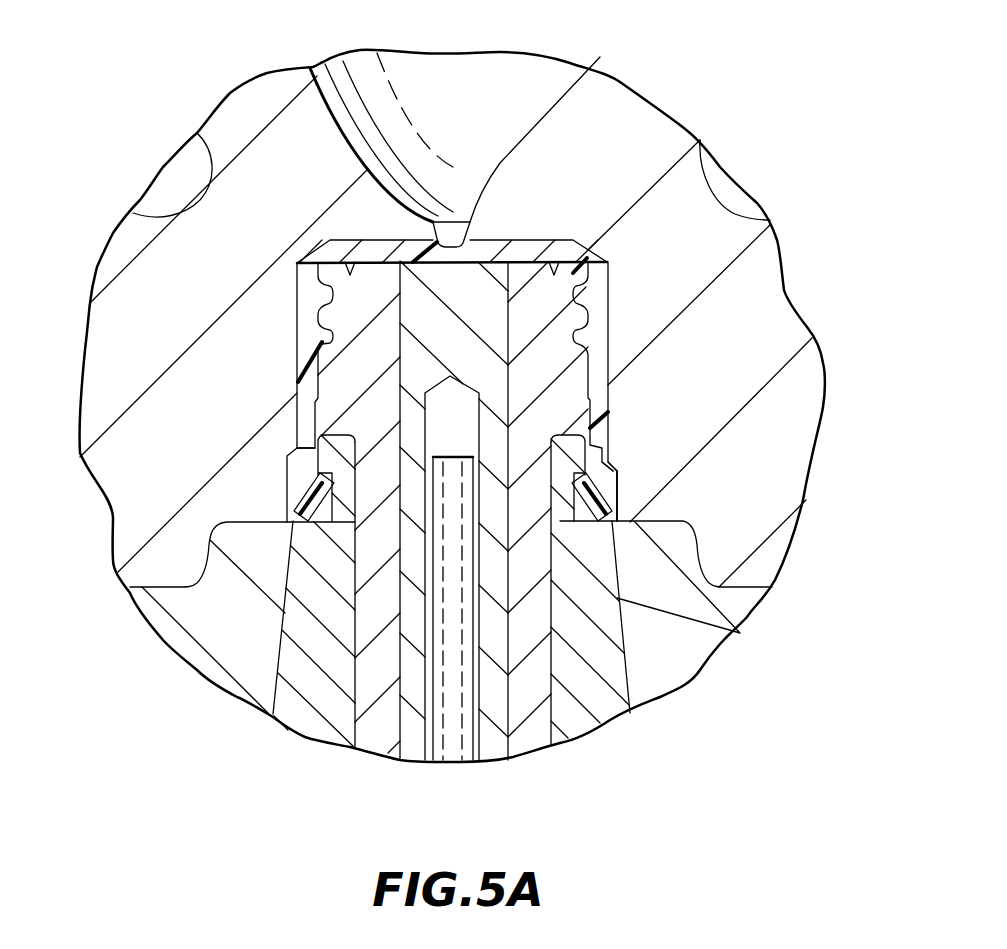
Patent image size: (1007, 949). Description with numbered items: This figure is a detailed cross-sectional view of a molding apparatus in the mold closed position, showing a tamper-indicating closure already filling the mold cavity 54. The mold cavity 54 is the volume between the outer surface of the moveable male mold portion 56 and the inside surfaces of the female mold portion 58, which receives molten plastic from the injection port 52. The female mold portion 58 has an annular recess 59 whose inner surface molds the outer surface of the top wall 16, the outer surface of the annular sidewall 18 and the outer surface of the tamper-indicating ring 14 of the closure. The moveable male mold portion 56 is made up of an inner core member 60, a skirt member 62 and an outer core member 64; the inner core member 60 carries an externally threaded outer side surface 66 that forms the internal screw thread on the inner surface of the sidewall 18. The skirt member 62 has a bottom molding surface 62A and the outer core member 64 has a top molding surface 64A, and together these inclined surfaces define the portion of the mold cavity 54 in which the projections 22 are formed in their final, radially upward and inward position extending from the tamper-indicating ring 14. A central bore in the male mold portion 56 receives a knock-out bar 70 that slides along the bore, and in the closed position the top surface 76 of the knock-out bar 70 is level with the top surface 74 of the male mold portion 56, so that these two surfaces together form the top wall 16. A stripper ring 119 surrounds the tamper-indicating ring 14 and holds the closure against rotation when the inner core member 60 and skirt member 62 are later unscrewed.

The tamper-indicating ring 14 is at (625, 490).
The top wall 16 is at (487, 250).
The annular sidewall 18 is at (593, 373).
The projections 22 is at (603, 488).
The injection port 52 is at (503, 127).
The mold cavity 54 is at (597, 275).
The moveable male mold portion 56 is at (540, 412).
The female mold portion 58 is at (277, 189).
The annular recess 59 is at (297, 307).
The inner core member 60 is at (612, 345).
The skirt member 62 is at (590, 448).
The bottom molding surface 62A is at (607, 495).
The outer core member 64 is at (600, 613).
The top molding surface 64A is at (741, 634).
The externally threaded outer side surface 66 is at (592, 312).
The knock-out bar 70 is at (590, 253).
The top surface of the movable male mold portion 74 is at (388, 258).
The top surface of knock-out bar 76 is at (455, 245).
The stripper ring 119 is at (680, 546).